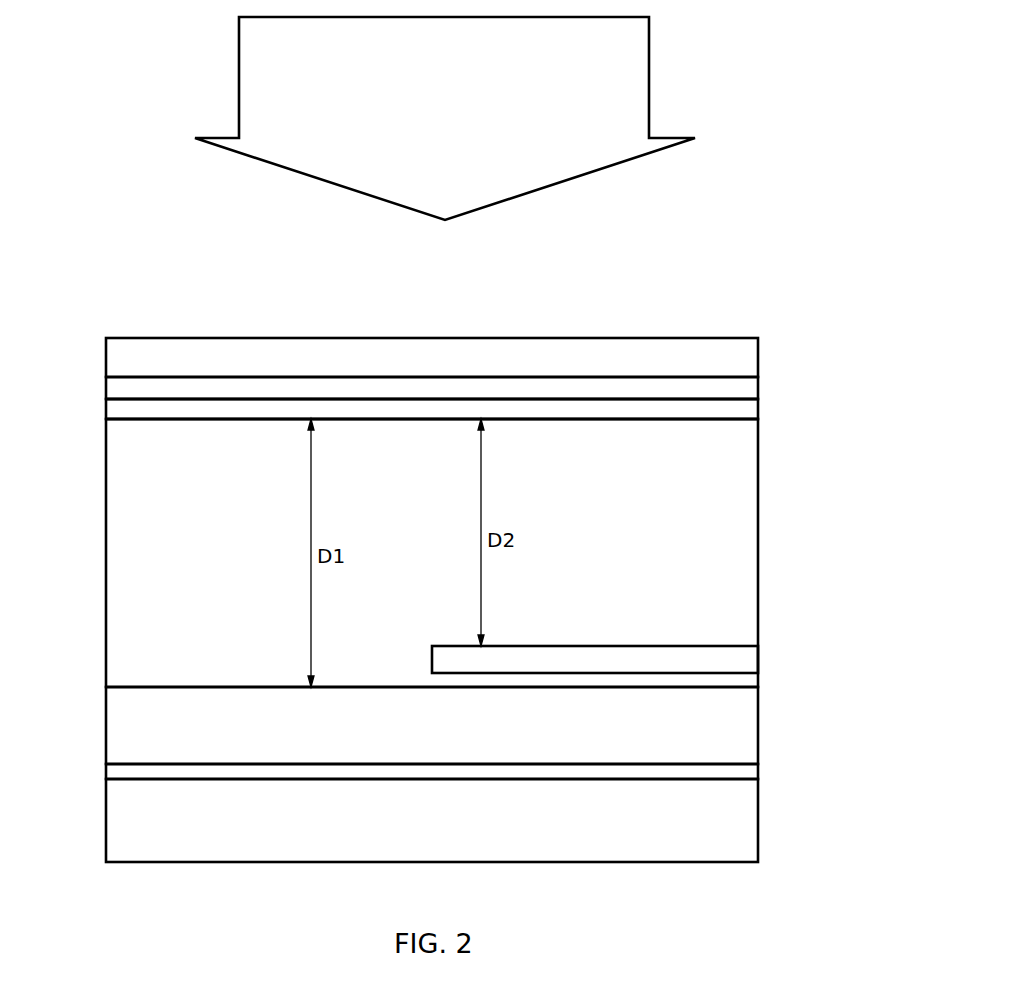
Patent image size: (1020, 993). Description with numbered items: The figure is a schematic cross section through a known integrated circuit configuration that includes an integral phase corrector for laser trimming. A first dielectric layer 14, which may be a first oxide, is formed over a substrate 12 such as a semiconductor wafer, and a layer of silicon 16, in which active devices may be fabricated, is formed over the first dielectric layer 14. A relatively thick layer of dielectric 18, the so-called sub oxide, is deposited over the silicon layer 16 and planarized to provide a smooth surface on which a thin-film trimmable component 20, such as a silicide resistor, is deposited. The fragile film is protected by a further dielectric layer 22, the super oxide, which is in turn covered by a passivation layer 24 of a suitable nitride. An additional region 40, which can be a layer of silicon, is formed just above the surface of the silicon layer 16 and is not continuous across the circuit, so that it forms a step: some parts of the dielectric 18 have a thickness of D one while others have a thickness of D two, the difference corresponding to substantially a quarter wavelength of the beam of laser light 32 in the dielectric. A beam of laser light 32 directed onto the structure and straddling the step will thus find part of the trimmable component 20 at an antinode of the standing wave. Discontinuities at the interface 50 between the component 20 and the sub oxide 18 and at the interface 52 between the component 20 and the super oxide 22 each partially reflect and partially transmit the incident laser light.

The substrate 12 is at (120, 843).
The first dielectric layer 14 is at (120, 772).
The layer of silicon 16 is at (102, 722).
The relatively thick layer of dielectric 18 is at (118, 560).
The trimmable component 20 is at (103, 412).
The further dielectric layer 22 is at (119, 388).
The passivation layer 24 is at (146, 368).
The beam of laser light 32 is at (651, 82).
The additional region 40 is at (737, 645).
The interface 50 is at (707, 420).
The interface 52 is at (737, 399).